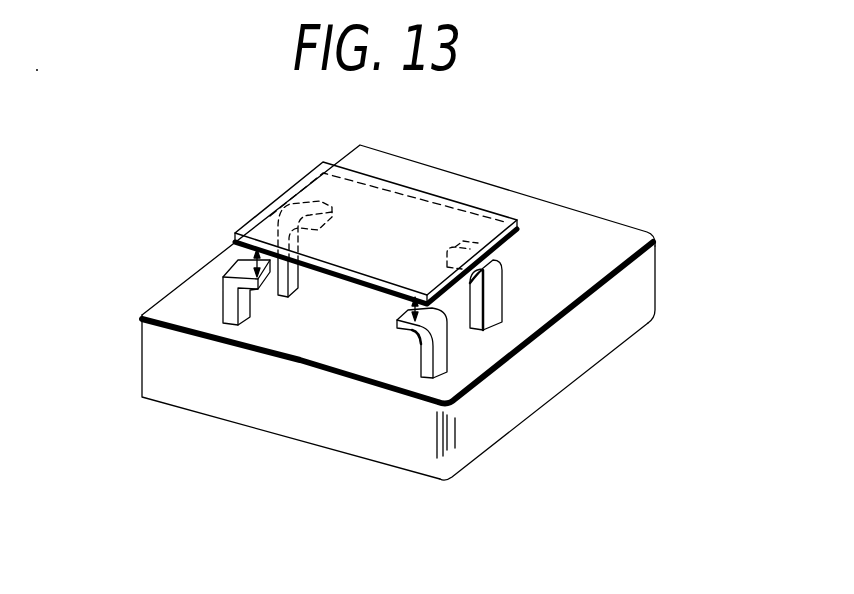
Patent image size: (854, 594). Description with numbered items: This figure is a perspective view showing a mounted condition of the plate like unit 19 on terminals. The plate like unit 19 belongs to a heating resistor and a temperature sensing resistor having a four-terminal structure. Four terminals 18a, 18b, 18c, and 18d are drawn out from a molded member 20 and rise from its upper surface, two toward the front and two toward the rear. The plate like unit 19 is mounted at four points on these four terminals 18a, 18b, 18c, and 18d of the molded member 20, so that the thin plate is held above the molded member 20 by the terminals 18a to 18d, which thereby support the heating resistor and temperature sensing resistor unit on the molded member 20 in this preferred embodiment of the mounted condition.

The terminal 18a is at (493, 298).
The terminal 18b is at (440, 355).
The terminal 18c is at (277, 210).
The terminal 18d is at (227, 302).
The plate like unit 19 is at (417, 208).
The molded member 20 is at (303, 417).